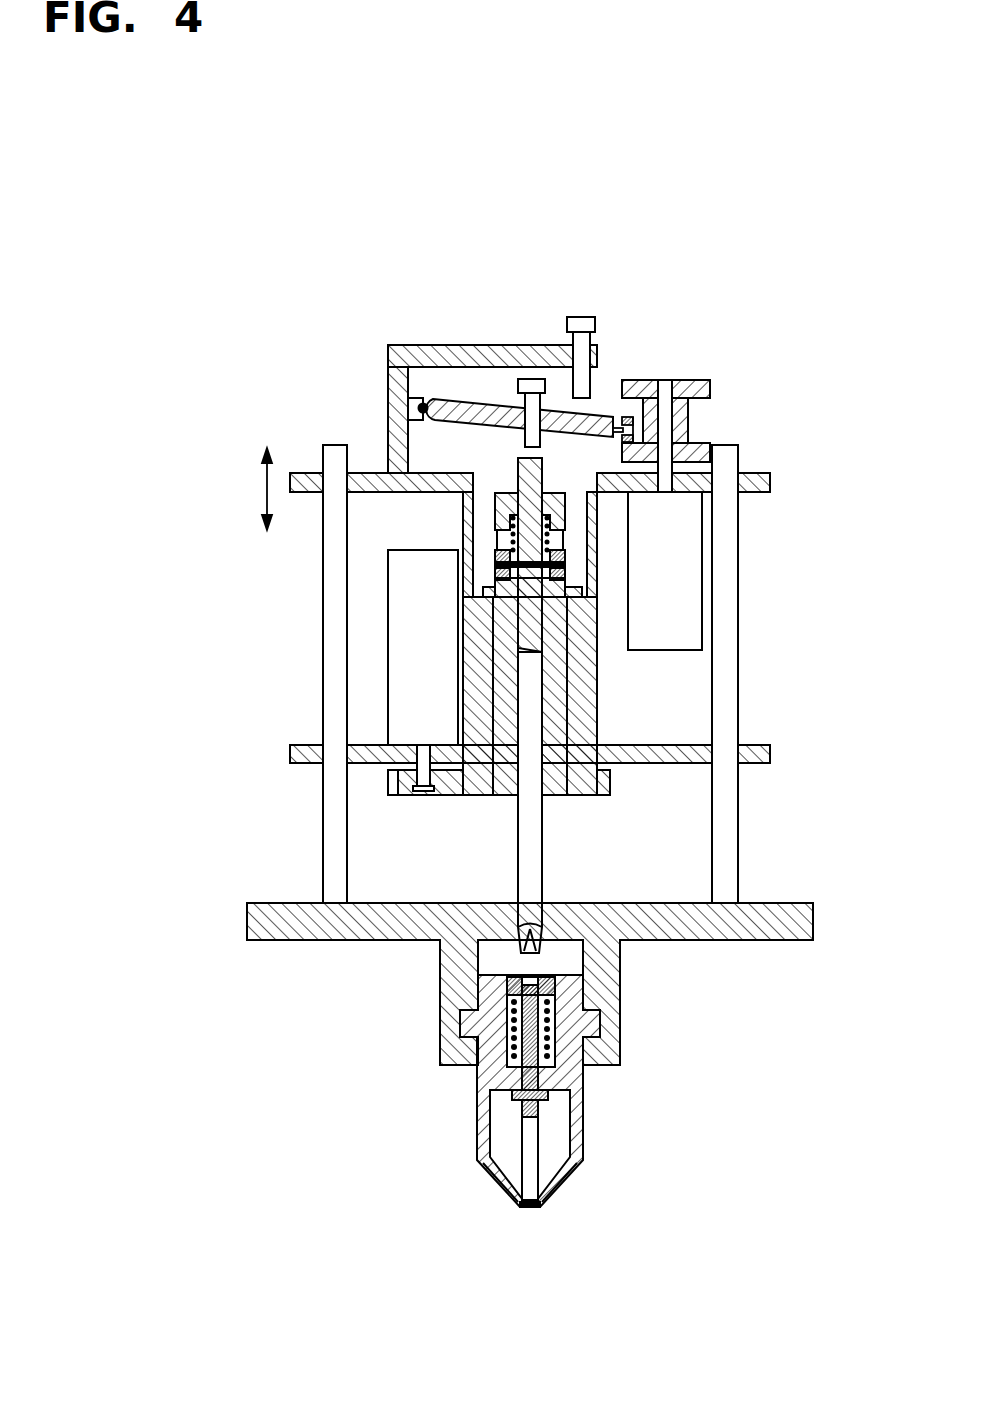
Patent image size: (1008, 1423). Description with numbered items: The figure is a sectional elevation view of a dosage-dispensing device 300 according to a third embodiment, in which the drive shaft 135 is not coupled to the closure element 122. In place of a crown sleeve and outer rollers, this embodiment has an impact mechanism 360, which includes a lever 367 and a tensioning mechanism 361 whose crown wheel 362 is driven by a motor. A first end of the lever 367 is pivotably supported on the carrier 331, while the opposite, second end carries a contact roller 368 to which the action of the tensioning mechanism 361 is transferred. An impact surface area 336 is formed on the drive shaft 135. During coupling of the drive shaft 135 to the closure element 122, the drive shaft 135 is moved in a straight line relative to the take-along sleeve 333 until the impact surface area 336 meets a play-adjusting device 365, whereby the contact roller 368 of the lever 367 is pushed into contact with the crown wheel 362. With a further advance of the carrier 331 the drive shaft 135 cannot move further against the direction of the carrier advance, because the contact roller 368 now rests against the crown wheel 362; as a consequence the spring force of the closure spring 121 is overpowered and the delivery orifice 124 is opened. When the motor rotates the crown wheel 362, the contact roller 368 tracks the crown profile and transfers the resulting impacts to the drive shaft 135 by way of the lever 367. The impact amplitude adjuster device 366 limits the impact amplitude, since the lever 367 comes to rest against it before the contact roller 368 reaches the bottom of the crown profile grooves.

The dosage-dispensing device 300 is at (338, 317).
The carrier 331 is at (362, 747).
The take-along sleeve 333 is at (552, 712).
The impact surface area 336 is at (528, 457).
The drive shaft 135 is at (530, 848).
The tensioning mechanism 361 is at (655, 580).
The impact mechanism 360 is at (756, 365).
The crown wheel 362 is at (688, 418).
The lever 367 is at (423, 405).
The play-adjusting device 365 is at (521, 380).
The impact amplitude adjuster device 366 is at (579, 317).
The contact roller 368 is at (627, 417).
The closure spring 121 is at (547, 1027).
The closure element 122 is at (535, 1127).
The delivery orifice 124 is at (530, 1225).